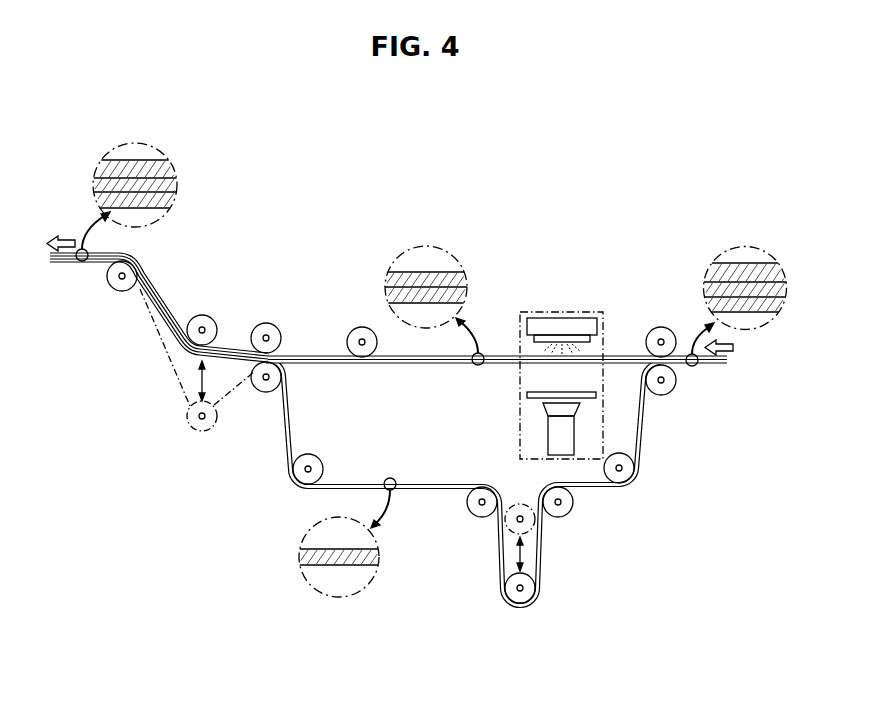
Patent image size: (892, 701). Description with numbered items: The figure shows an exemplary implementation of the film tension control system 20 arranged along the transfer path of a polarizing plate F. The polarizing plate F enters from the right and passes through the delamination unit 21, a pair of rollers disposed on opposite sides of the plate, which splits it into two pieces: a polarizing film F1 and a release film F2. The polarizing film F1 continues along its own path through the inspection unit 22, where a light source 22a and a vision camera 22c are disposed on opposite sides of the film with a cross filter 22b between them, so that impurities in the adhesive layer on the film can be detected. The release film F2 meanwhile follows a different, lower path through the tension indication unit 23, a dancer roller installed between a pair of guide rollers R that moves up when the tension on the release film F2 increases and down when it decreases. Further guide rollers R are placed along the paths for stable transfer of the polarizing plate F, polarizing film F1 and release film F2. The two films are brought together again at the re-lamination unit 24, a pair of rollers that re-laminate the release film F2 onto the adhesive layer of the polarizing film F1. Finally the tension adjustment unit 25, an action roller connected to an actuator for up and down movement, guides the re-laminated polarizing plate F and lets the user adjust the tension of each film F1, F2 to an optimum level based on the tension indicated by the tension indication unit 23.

The film tension control system 20 is at (664, 168).
The delamination unit 21 is at (680, 394).
The inspection unit 22 is at (535, 369).
The light source 22a is at (578, 318).
The cross filter 22b is at (520, 395).
The vision camera 22c is at (548, 445).
The tension indication unit 23 is at (552, 581).
The re-lamination unit 24 is at (278, 322).
The tension adjustment unit 25 is at (209, 314).
The guide rollers R is at (121, 291).
The polarizing plate F is at (135, 143).
The polarizing film F1 is at (426, 246).
The release film F2 is at (340, 598).